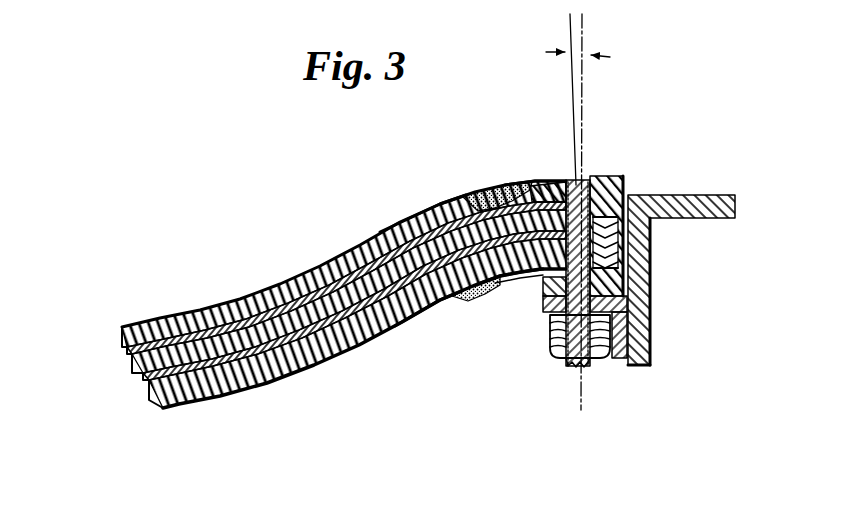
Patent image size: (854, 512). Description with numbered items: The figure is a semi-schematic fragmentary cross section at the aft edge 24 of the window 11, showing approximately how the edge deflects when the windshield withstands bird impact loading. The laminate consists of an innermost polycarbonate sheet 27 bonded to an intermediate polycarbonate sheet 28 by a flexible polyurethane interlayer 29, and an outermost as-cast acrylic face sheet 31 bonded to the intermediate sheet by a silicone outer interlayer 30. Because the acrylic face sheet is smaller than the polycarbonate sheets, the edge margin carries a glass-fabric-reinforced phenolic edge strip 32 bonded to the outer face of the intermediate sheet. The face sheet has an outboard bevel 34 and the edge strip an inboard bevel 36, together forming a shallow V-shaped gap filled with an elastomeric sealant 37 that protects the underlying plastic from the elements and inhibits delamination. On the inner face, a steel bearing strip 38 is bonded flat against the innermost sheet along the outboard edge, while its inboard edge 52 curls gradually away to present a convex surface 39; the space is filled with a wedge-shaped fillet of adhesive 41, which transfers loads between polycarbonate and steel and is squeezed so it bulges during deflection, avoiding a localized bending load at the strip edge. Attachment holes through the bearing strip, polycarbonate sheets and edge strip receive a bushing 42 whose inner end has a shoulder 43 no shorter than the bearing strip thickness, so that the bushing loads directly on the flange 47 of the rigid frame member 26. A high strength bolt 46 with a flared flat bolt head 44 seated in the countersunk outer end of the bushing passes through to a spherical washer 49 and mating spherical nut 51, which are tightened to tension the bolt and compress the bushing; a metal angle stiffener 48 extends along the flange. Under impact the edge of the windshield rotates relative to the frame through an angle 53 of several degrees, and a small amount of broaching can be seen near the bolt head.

The window 11 is at (266, 386).
The aft edge 24 is at (625, 178).
The frame member 26 is at (652, 300).
The inner sheet 27 is at (162, 400).
The intermediate polycarbonate sheet 28 is at (133, 361).
The interlayer 29 is at (148, 378).
The outer interlayer 30 is at (122, 347).
The acrylic face sheet 31 is at (122, 329).
The edge strip 32 is at (537, 182).
The outboard bevel 34 is at (463, 197).
The inboard bevel 36 is at (507, 185).
The sealant 37 is at (478, 193).
The bearing strip 38 is at (484, 300).
The convex surface 39 is at (462, 305).
The fillet of adhesive 41 is at (460, 302).
The bushing 42 is at (614, 233).
The shoulder 43 is at (614, 248).
The bolt head 44 is at (584, 181).
The bolt 46 is at (583, 367).
The flange 47 is at (545, 292).
The angle stiffener 48 is at (548, 306).
The spherical washer 49 is at (553, 326).
The spherical nut 51 is at (560, 342).
The inboard edge 52 is at (500, 288).
The angle 53 is at (583, 28).